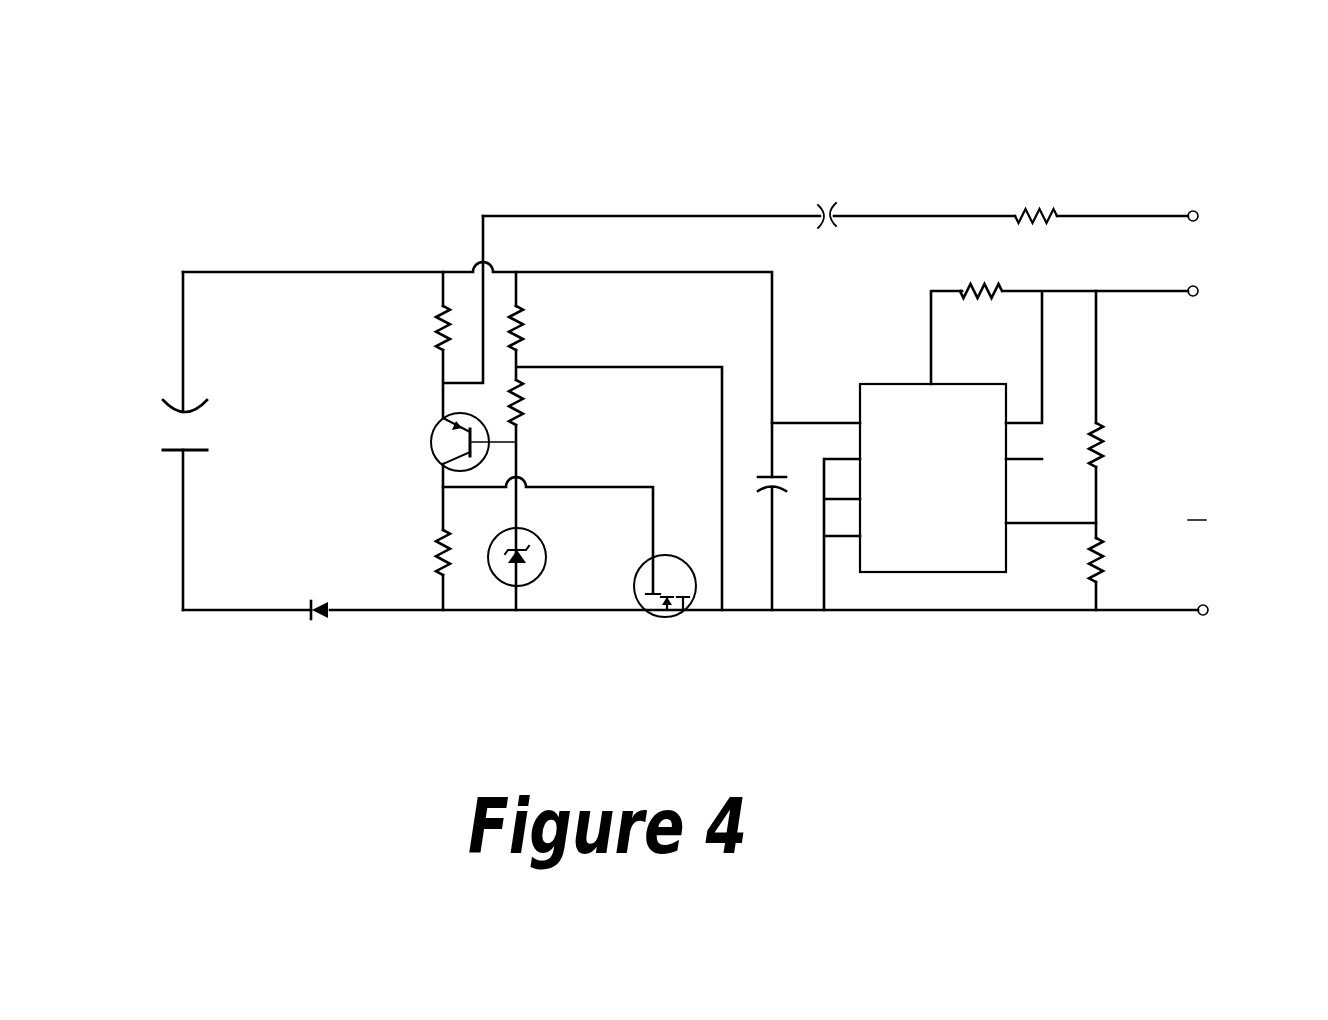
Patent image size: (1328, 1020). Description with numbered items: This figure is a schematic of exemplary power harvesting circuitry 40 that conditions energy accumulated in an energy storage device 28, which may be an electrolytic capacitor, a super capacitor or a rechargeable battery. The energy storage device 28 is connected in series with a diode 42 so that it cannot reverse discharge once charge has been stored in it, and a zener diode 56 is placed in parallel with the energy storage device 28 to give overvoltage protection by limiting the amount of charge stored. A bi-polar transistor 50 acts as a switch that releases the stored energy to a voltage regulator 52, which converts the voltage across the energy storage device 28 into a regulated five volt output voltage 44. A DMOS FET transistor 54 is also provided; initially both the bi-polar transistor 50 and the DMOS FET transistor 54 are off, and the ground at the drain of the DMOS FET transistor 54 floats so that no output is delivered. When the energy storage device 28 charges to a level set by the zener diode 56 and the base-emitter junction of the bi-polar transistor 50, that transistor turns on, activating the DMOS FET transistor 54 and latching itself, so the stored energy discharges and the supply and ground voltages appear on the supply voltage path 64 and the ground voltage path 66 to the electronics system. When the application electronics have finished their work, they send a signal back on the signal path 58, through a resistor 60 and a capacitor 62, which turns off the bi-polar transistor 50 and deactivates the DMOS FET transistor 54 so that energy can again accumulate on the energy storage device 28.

The power harvesting circuitry 40 is at (1143, 152).
The energy storage device 28 is at (222, 410).
The diode 42 is at (330, 616).
The regulated output voltage 44 is at (1195, 450).
The bi-polar transistor 50 is at (437, 420).
The voltage regulator 52 is at (926, 555).
The DMOS FET transistor 54 is at (665, 552).
The zener diode 56 is at (548, 548).
The signal path 58 is at (1202, 213).
The resistor 60 is at (1058, 213).
The capacitor 62 is at (830, 200).
The supply voltage path 64 is at (1202, 288).
The ground voltage path 66 is at (1212, 607).